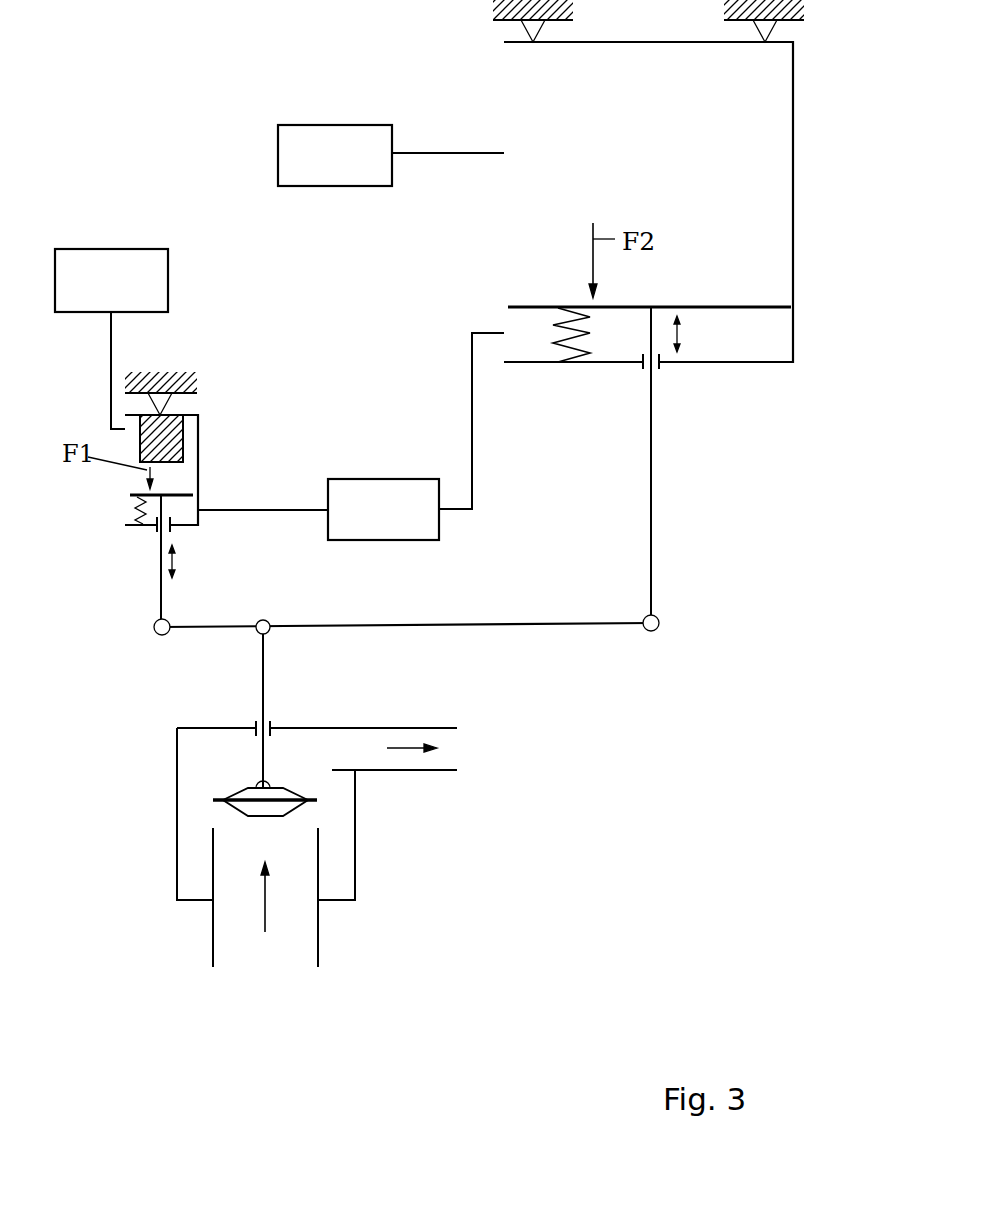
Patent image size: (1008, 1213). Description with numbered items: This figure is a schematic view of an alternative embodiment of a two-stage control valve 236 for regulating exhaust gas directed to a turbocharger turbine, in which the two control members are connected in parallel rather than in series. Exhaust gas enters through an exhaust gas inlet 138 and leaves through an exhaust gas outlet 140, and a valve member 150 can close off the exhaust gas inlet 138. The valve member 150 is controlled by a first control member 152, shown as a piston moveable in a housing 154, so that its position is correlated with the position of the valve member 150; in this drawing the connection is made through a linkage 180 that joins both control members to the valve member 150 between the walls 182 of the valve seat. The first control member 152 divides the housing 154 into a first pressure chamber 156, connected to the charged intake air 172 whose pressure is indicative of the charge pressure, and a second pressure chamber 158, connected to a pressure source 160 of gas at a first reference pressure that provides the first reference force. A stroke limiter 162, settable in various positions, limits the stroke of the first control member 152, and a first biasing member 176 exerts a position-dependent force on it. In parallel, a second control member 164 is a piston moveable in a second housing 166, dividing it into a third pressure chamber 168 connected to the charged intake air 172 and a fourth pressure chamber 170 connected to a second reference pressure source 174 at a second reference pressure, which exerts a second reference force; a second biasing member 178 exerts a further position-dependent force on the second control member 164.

The two-stage control valve 236 is at (806, 101).
The second housing 166 is at (793, 135).
The fourth pressure chamber 170 is at (762, 207).
The third pressure chamber 168 is at (762, 335).
The second control member 164 is at (753, 305).
The second biasing member 178 is at (556, 333).
The second reference pressure source 174 is at (307, 125).
The pressure source 160 is at (83, 249).
The charged intake air 172 is at (357, 479).
The housing 154 is at (198, 422).
The stroke limiter 162 is at (168, 448).
The second pressure chamber 158 is at (133, 482).
The first control member 152 is at (178, 492).
The first biasing member 176 is at (130, 512).
The first pressure chamber 156 is at (180, 515).
The linkage 180 is at (265, 662).
The exhaust gas outlet 140 is at (465, 744).
The valve seat walls 182 is at (318, 828).
The valve member 150 is at (233, 792).
The exhaust gas inlet 138 is at (235, 974).